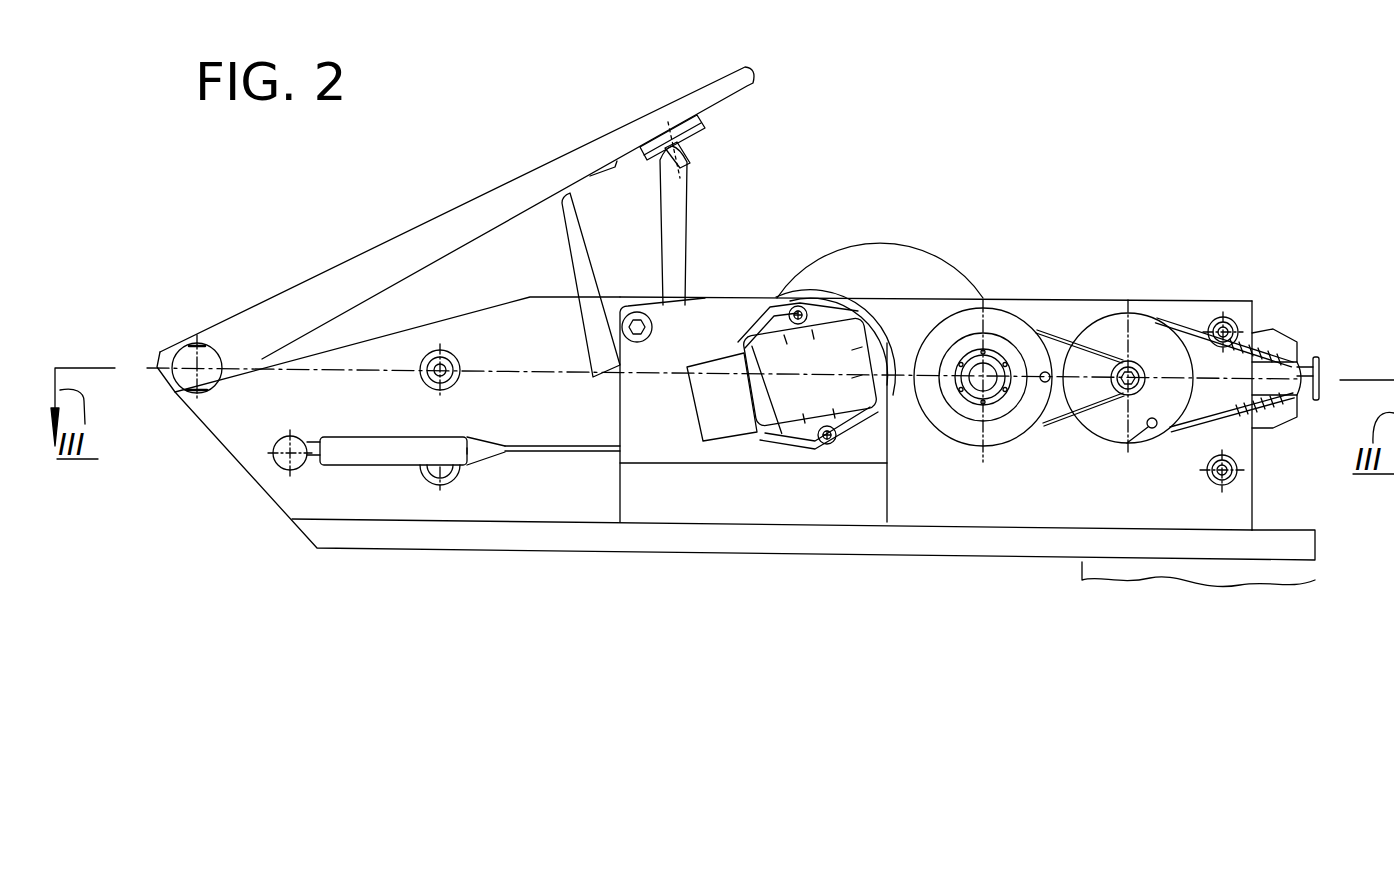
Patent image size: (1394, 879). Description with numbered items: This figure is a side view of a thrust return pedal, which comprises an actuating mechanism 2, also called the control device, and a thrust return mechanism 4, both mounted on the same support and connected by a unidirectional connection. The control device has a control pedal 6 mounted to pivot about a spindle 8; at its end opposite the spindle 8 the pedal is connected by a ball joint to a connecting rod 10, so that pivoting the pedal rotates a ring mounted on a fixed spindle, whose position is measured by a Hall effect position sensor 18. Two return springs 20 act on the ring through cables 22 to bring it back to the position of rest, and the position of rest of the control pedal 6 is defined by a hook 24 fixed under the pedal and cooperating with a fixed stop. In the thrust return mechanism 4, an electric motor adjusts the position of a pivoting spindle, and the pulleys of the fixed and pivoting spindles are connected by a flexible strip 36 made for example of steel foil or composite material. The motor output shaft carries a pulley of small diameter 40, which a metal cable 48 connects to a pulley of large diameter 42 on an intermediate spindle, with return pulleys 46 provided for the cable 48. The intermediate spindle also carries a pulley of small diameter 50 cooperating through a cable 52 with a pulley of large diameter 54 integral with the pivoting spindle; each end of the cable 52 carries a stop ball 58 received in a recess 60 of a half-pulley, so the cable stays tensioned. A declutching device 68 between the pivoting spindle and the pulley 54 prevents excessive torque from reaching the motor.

The actuating mechanism 2 is at (468, 170).
The thrust return mechanism 4 is at (1008, 262).
The control pedal 6 is at (362, 259).
The spindle 8 is at (186, 384).
The connecting rod 10 is at (673, 230).
The Hall effect position sensor 18 is at (783, 400).
The return spring 20 is at (357, 446).
The cable 22 is at (547, 444).
The hook 24 is at (553, 252).
The flexible strip 36 is at (853, 243).
The pulley of small diameter 40 is at (1318, 362).
The pulley of large diameter 42 is at (1110, 335).
The return pulley 46 is at (1295, 397).
The cable 48 is at (1221, 402).
The pulley of small diameter 50 is at (1110, 397).
The cable 52 is at (1048, 422).
The pulley of large diameter 54 is at (972, 433).
The stop ball 58 is at (1044, 372).
The recess 60 is at (1109, 347).
The declutching device 68 is at (957, 403).